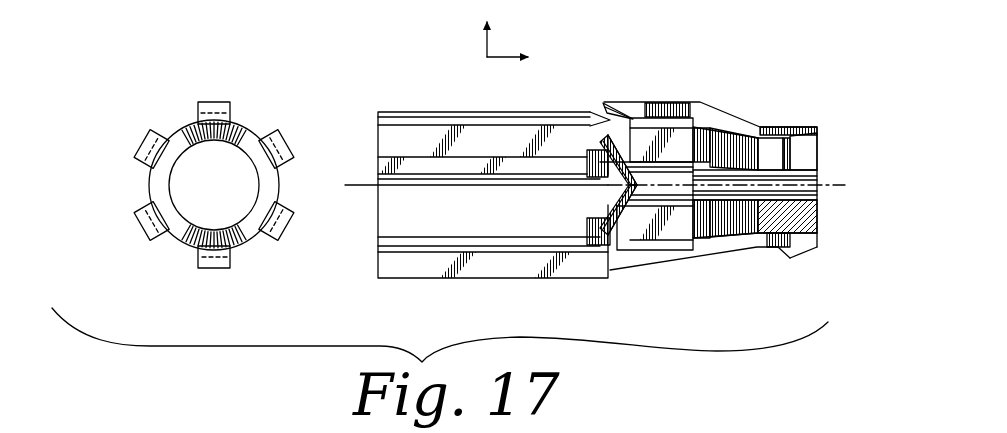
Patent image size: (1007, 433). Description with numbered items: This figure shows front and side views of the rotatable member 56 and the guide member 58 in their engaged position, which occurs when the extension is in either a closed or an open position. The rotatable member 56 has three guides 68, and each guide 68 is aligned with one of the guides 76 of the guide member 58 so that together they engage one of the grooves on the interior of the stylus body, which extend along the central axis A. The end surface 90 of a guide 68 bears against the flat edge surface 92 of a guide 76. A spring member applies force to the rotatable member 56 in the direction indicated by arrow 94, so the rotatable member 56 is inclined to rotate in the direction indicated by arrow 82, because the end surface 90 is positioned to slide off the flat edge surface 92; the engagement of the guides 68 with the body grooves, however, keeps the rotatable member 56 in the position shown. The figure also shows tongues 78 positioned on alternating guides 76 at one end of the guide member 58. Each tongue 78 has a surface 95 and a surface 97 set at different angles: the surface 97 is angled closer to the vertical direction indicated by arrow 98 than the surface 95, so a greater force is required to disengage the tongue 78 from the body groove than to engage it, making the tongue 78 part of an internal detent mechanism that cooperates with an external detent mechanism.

The rotatable member 56 is at (437, 100).
The guide member 58 is at (808, 90).
The guides 68 is at (137, 140).
The guides 76 is at (165, 132).
The tongues 78 is at (812, 152).
The arrow 82 is at (63, 160).
The end surface 90 is at (587, 148).
The flat edge surface 92 is at (630, 113).
The arrow 94 is at (503, 57).
The surface 95 is at (810, 258).
The surface 97 is at (775, 253).
The arrow 98 is at (485, 50).
The axis A is at (833, 183).